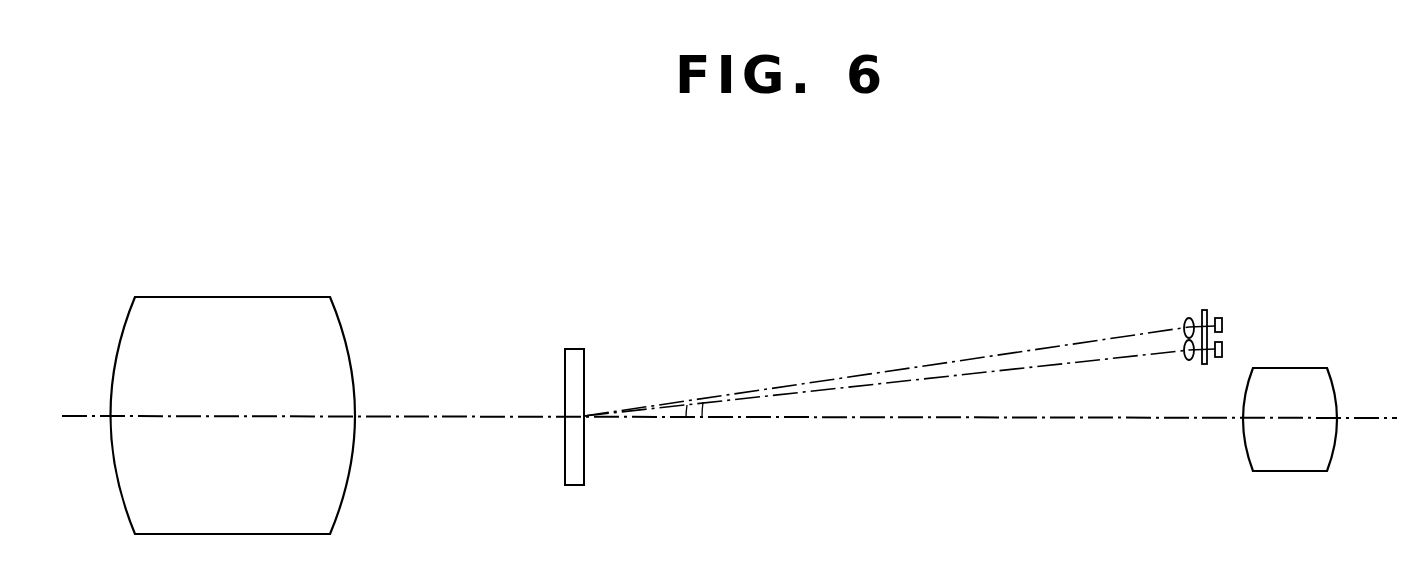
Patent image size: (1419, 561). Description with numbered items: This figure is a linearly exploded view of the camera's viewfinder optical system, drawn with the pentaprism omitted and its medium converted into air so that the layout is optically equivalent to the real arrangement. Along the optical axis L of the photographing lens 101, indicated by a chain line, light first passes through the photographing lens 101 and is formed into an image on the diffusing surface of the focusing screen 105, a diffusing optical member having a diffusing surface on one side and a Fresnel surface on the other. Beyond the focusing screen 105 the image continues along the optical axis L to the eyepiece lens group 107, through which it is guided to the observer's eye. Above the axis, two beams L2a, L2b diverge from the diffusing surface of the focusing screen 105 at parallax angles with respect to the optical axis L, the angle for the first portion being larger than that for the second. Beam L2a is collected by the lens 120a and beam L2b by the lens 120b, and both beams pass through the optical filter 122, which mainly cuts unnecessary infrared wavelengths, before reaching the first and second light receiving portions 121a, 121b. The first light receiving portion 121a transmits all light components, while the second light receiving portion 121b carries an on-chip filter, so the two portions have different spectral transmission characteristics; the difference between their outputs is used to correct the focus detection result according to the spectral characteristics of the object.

The photographing lens 101 is at (232, 312).
The focusing screen 105 is at (577, 355).
The eyepiece lens group 107 is at (1333, 380).
The lens 120a is at (1188, 320).
The lens 120b is at (1190, 362).
The first light receiving portion 121a is at (1222, 322).
The second light receiving portion 121b is at (1222, 348).
The optical filter 122 is at (1205, 310).
The optical axis L is at (440, 415).
The light beam L2a is at (1000, 357).
The light beam L2b is at (1037, 368).